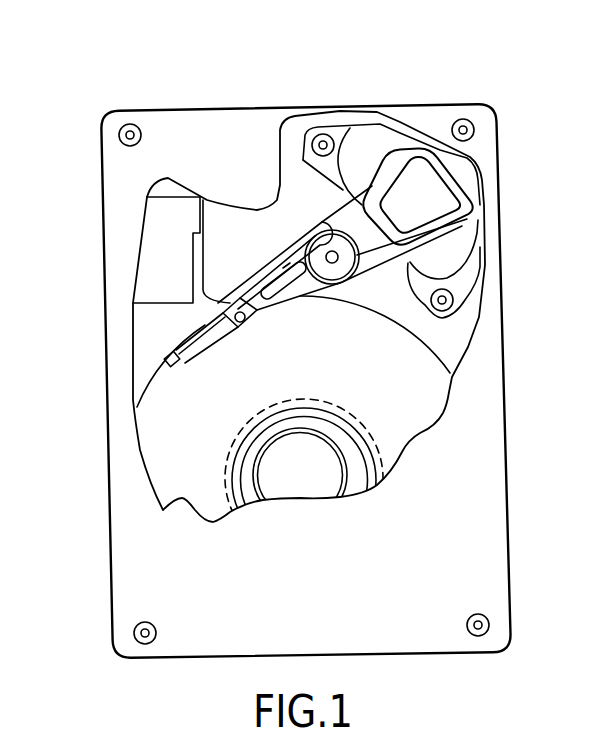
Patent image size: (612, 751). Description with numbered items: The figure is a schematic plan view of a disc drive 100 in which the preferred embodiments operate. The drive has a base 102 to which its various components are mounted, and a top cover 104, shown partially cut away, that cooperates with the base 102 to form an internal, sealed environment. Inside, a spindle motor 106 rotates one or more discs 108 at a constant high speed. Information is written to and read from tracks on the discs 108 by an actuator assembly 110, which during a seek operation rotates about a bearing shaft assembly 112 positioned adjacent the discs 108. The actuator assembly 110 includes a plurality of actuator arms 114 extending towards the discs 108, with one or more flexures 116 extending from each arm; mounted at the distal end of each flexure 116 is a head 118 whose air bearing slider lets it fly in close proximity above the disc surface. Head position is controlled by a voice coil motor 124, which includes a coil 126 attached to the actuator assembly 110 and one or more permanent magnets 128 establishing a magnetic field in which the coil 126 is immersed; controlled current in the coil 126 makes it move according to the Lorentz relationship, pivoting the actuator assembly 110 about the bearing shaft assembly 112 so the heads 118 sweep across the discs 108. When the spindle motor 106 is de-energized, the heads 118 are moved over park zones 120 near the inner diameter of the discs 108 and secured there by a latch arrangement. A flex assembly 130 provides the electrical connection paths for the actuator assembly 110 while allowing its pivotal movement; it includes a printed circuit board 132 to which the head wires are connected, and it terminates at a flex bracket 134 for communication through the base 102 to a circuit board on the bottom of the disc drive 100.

The disc drive 100 is at (122, 72).
The base 102 is at (142, 333).
The top cover 104 is at (143, 547).
The spindle motor 106 is at (302, 480).
The disc 108 is at (415, 417).
The actuator assembly 110 is at (334, 258).
The bearing shaft assembly 112 is at (338, 258).
The actuator arm 114 is at (303, 300).
The flexure 116 is at (205, 340).
The head 118 is at (165, 367).
The park zone 120 is at (223, 472).
The voice coil motor 124 is at (372, 150).
The coil 126 is at (462, 193).
The permanent magnet 128 is at (352, 163).
The flex assembly 130 is at (283, 268).
The printed circuit board 132 is at (303, 235).
The flex bracket 134 is at (162, 258).